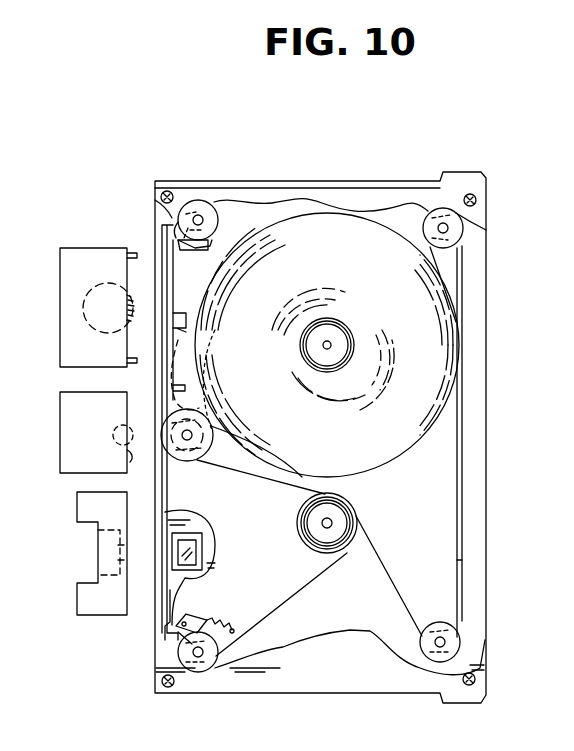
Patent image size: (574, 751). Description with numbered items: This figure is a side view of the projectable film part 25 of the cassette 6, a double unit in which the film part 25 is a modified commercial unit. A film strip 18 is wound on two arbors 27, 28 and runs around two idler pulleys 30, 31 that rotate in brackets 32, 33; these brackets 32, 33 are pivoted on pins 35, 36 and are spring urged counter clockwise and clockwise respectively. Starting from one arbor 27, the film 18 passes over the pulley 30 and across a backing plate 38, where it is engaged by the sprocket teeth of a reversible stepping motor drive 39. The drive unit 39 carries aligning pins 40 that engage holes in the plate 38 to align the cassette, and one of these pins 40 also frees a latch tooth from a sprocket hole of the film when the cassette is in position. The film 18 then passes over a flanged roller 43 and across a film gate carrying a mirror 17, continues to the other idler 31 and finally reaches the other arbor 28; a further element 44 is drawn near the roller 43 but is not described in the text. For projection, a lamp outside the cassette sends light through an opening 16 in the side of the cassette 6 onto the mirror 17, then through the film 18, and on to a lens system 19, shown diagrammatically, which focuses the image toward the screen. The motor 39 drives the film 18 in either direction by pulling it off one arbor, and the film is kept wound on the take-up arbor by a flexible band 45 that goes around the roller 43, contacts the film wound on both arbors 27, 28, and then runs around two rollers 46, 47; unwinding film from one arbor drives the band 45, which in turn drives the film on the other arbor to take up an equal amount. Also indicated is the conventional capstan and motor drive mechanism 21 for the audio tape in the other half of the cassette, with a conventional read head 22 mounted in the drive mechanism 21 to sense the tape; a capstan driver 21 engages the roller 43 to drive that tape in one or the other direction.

The cassette 6 is at (372, 697).
The opening 16 is at (185, 580).
The mirror 17 is at (188, 553).
The film 18 is at (274, 205).
The lens system 19 is at (98, 612).
The capstan and motor drive mechanism 21 is at (72, 427).
The read head 22 is at (128, 462).
The film part 25 is at (440, 548).
The arbor 27 is at (330, 343).
The arbor 28 is at (332, 522).
The idler pulley 30 is at (200, 210).
The idler pulley 31 is at (210, 667).
The bracket 32 is at (216, 240).
The bracket 33 is at (178, 632).
The pin 35 is at (155, 200).
The pin 36 is at (190, 614).
The backing plate 38 is at (191, 270).
The reversible stepping motor drive 39 is at (70, 248).
The aligning pins 40 is at (133, 252).
The flanged roller 43 is at (196, 434).
The pressure pad 44 is at (199, 380).
The flexible band 45 is at (255, 477).
The roller 46 is at (450, 640).
The roller 47 is at (454, 232).